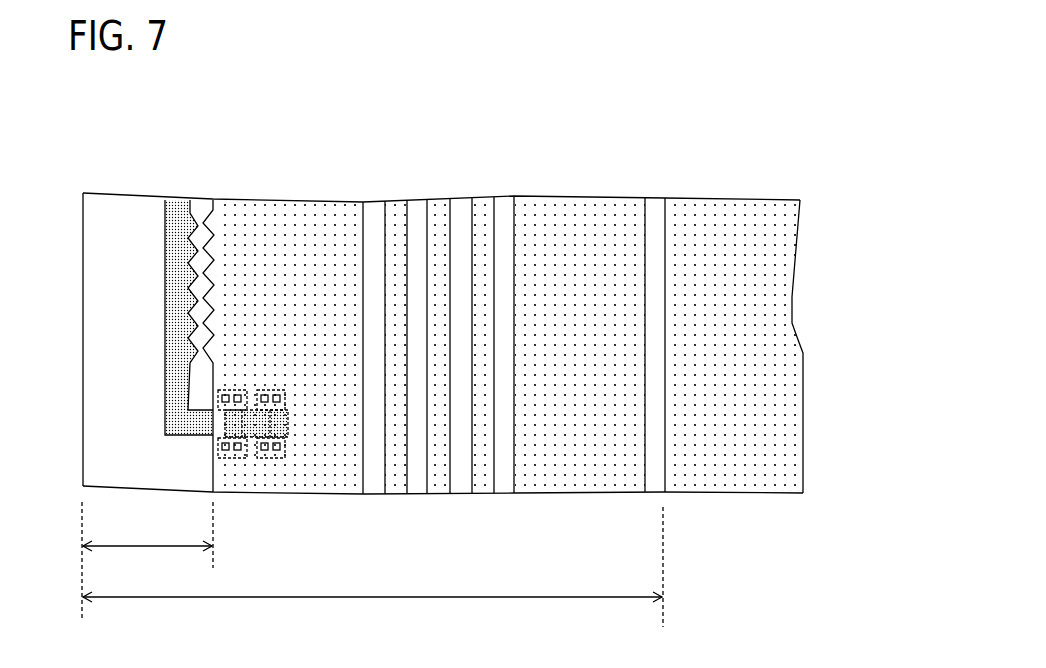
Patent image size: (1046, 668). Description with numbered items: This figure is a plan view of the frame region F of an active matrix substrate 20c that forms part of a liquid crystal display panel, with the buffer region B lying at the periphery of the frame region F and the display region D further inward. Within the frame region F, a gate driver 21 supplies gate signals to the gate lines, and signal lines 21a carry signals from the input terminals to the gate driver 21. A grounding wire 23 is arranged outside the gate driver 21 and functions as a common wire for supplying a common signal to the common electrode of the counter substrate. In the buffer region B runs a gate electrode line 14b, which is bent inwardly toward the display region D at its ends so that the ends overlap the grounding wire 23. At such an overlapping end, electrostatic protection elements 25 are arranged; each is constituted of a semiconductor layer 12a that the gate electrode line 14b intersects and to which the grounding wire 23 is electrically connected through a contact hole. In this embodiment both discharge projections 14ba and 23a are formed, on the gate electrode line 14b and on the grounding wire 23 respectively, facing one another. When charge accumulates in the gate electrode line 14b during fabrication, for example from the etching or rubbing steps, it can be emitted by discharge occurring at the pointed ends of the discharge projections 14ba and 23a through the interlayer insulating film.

The active matrix substrate 20c is at (142, 124).
The gate electrode line 14b is at (175, 285).
The discharge projection 14ba is at (175, 200).
The discharge projection 23a is at (214, 208).
The grounding wire 23 is at (302, 220).
The signal lines 21a is at (494, 184).
The gate driver 21 is at (588, 225).
The display region D is at (727, 225).
The semiconductor layer 12a is at (232, 388).
The electrostatic protection element 25 is at (294, 400).
The buffer region B is at (147, 561).
The frame region F is at (373, 567).